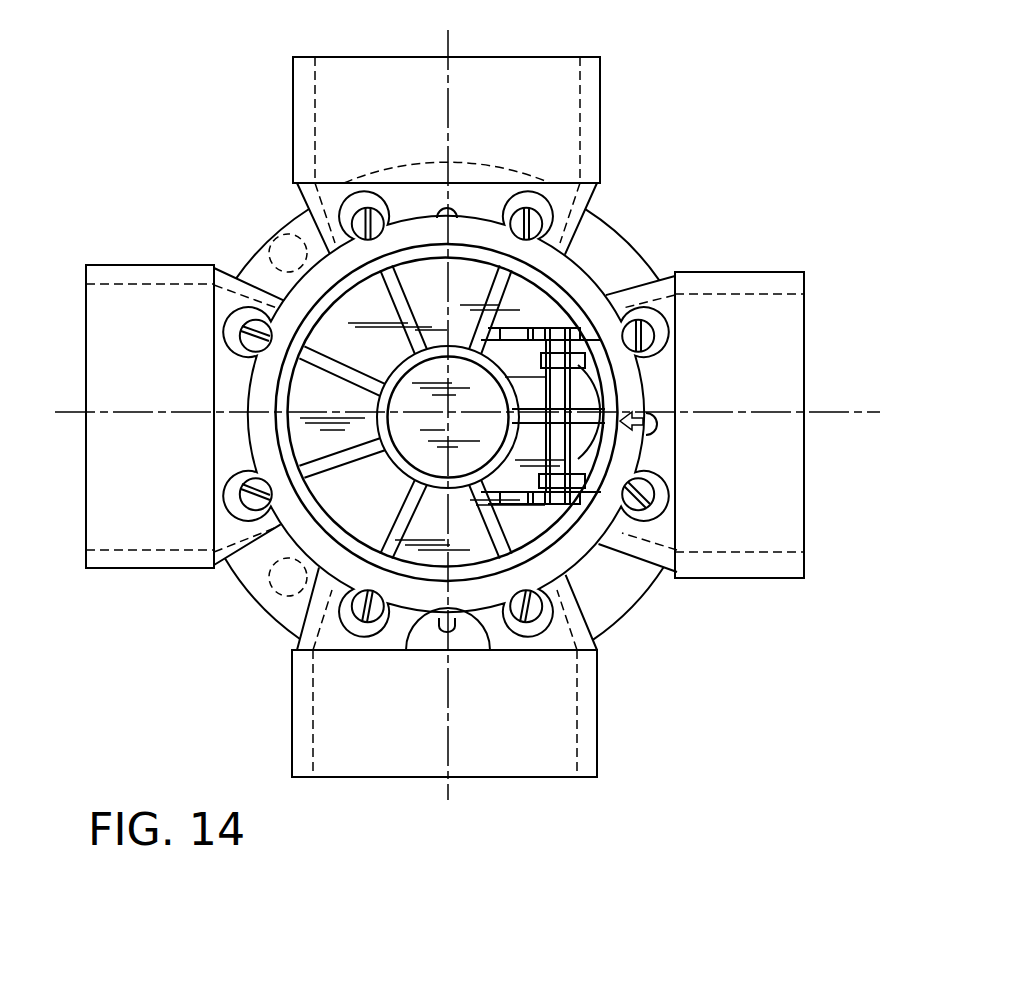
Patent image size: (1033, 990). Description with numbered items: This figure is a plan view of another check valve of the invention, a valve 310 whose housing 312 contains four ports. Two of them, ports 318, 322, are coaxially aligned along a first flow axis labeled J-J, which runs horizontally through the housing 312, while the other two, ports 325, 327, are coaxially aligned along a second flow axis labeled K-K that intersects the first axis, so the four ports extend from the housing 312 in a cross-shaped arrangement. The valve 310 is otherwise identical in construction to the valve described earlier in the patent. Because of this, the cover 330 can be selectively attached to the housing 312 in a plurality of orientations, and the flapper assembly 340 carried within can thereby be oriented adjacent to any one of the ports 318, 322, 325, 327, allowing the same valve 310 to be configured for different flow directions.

The valve 310 is at (468, 415).
The housing 312 is at (612, 583).
The port 318 is at (770, 548).
The port 322 is at (133, 537).
The port 325 is at (582, 97).
The port 327 is at (577, 733).
The cover 330 is at (324, 276).
The flapper assembly 340 is at (562, 352).